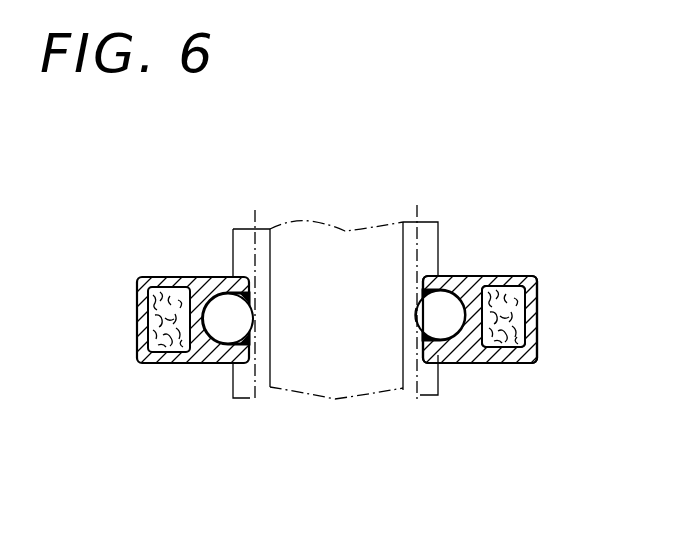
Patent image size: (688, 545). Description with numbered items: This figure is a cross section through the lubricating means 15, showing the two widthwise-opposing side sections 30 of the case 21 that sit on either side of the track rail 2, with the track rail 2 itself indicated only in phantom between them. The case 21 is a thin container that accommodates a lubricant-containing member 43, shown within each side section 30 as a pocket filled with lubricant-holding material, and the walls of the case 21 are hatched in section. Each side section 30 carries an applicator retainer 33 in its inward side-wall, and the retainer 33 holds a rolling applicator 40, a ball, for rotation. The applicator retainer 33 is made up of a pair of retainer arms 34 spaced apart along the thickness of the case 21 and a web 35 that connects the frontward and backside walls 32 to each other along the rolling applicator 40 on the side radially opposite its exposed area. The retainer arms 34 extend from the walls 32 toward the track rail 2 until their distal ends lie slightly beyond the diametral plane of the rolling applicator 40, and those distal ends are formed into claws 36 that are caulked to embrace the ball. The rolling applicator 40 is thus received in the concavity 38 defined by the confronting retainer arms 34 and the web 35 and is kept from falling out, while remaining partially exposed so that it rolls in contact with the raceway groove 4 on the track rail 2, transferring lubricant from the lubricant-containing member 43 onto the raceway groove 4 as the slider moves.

The track rail 2 is at (333, 262).
The raceway groove 4 is at (253, 395).
The lubricating means 15 is at (541, 273).
The case 21 is at (537, 307).
The side section 30 is at (142, 327).
The frontward and backside walls 32 is at (172, 277).
The applicator retainer 33 is at (253, 331).
The retainer arm 34 is at (234, 282).
The web 35 is at (199, 338).
The claw 36 is at (250, 290).
The concavity 38 is at (215, 327).
The rolling applicator 40 is at (238, 308).
The lubricant-containing member 43 is at (162, 315).